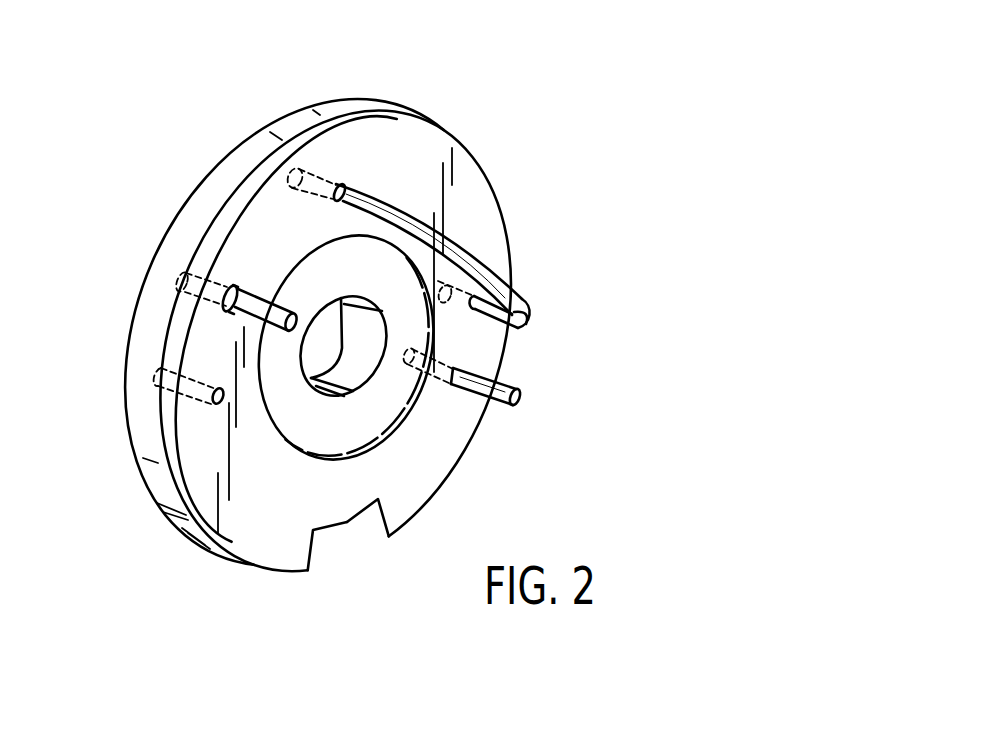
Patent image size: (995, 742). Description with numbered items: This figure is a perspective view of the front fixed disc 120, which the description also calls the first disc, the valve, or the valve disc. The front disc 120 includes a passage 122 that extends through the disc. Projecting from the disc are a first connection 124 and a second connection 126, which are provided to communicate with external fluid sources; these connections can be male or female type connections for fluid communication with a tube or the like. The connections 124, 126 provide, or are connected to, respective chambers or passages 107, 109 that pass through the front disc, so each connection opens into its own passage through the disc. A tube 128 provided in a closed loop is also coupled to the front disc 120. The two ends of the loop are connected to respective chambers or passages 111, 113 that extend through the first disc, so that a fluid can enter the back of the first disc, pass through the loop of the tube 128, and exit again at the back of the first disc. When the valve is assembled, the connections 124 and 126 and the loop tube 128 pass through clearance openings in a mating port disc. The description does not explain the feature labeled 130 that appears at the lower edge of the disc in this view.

The chamber or passage 107 is at (192, 313).
The chamber or passage 109 is at (427, 378).
The chamber or passage 111 is at (303, 174).
The chamber or passage 113 is at (450, 305).
The front fixed disc 120 is at (510, 122).
The passage 122 is at (218, 400).
The first connection 124 is at (268, 303).
The second connection 126 is at (500, 407).
The tube 128 is at (481, 265).
The notch 130 is at (373, 519).